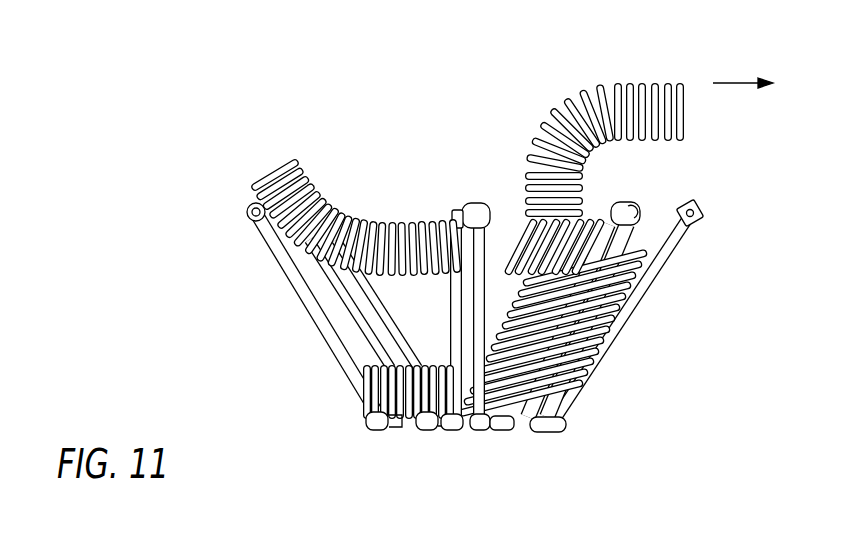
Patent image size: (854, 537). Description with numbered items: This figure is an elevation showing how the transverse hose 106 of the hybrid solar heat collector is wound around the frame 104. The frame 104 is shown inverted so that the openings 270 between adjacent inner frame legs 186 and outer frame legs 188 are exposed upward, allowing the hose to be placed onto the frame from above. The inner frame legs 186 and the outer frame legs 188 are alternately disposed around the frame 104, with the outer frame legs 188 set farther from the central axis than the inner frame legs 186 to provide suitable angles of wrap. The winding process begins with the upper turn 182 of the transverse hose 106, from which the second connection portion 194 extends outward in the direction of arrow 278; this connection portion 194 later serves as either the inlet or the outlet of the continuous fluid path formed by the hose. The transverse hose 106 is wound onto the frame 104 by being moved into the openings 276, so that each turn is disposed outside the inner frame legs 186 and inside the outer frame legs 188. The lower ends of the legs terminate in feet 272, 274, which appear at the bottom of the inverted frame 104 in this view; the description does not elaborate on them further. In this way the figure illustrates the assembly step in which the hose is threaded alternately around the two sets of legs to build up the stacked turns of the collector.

The frame 104 is at (323, 341).
The transverse hose 106 is at (334, 201).
The upper turn 182 is at (408, 421).
The inner frame legs 186 is at (634, 203).
The outer frame legs 188 is at (472, 205).
The second connection portion 194 is at (613, 87).
The openings 270 is at (290, 282).
The foot 272 is at (368, 429).
The foot 274 is at (547, 428).
The openings 276 is at (522, 200).
The arrow 278 is at (743, 83).